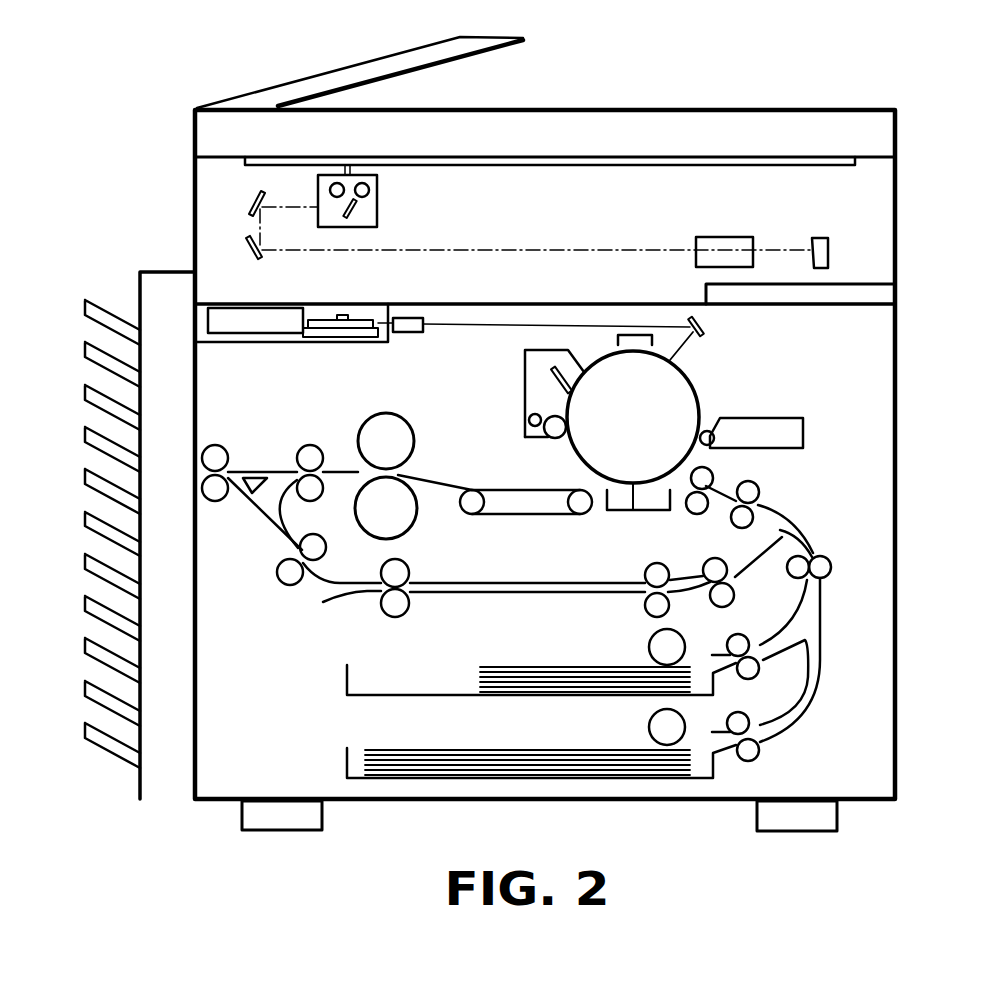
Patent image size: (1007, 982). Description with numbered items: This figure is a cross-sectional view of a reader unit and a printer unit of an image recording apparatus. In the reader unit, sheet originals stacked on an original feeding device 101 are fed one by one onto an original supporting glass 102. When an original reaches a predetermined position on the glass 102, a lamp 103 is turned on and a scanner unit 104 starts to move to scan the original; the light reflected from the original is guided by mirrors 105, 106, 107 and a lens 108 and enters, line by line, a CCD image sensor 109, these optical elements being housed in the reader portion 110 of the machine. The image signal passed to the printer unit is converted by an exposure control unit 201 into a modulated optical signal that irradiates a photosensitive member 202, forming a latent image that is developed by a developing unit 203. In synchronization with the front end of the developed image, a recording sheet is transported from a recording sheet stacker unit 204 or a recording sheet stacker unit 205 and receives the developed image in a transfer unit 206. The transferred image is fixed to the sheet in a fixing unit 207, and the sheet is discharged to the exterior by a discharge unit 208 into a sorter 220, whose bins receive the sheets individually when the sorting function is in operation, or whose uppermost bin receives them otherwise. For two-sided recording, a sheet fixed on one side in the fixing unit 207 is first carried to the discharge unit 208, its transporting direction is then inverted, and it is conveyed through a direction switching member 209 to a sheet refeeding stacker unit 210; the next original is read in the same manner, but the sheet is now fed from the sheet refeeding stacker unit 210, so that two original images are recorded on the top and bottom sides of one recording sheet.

The original feeding device 101 is at (372, 67).
The original supporting glass 102 is at (772, 160).
The lamp 103 is at (360, 183).
The scanner unit 104 is at (377, 205).
The mirror 105 is at (355, 213).
The mirror 106 is at (252, 203).
The mirror 107 is at (248, 248).
The lens 108 is at (722, 242).
The CCD image sensor 109 is at (820, 248).
The reader unit 110 is at (897, 300).
The exposure control unit 201 is at (362, 320).
The photosensitive member 202 is at (687, 383).
The developing unit 203 is at (775, 430).
The recording sheet stacker unit 204 is at (345, 683).
The recording sheet stacker unit 205 is at (345, 765).
The transfer unit 206 is at (627, 500).
The fixing unit 207 is at (402, 492).
The discharge unit 208 is at (212, 485).
The direction switching member 209 is at (258, 492).
The sheet refeeding stacker unit 210 is at (550, 595).
The sorter 220 is at (150, 290).